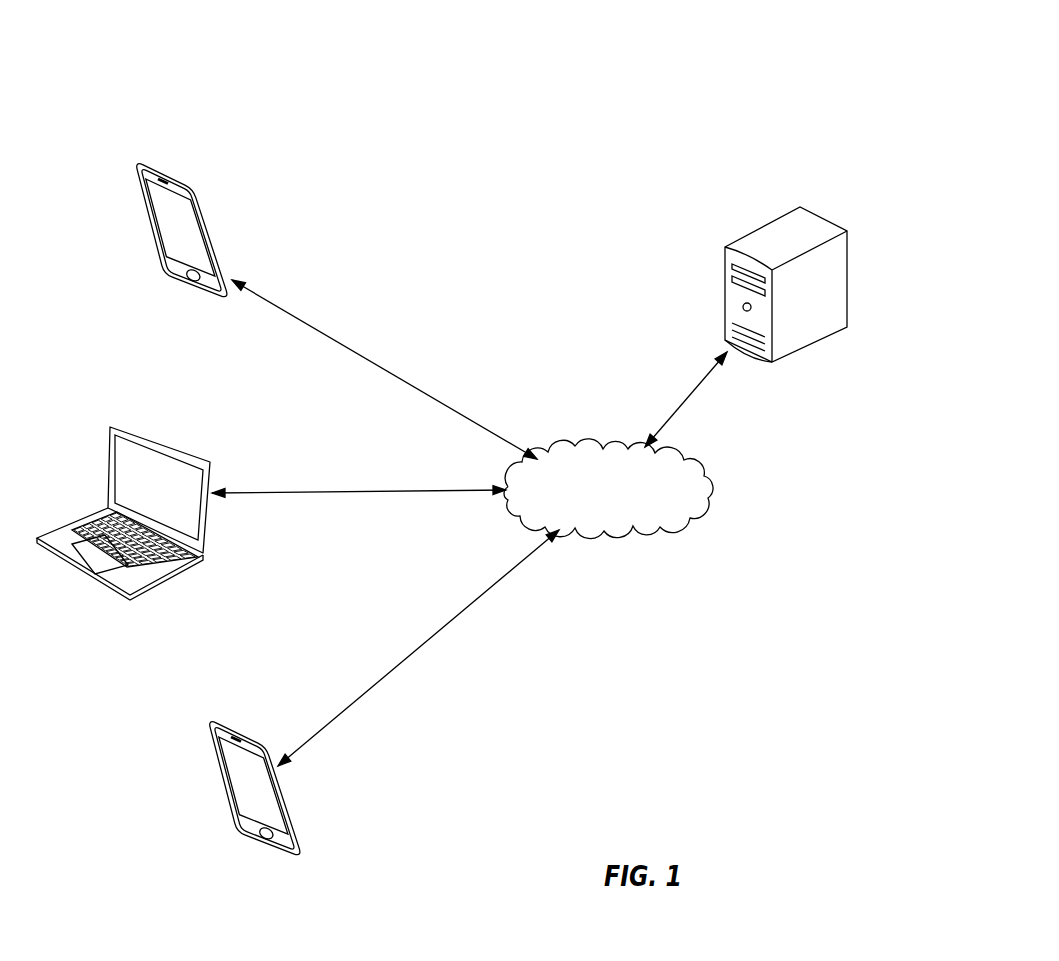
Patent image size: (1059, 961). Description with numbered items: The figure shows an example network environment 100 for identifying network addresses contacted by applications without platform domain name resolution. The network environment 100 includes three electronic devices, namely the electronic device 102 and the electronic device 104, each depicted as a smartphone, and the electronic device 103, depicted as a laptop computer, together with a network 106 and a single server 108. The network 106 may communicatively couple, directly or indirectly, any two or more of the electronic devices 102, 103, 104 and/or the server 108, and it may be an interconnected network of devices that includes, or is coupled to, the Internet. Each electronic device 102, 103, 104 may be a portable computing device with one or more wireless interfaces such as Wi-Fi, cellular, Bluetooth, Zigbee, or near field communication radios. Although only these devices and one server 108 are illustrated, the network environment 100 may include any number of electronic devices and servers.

The network environment 100 is at (198, 78).
The electronic device 102 is at (248, 850).
The electronic device 103 is at (123, 592).
The electronic device 104 is at (190, 293).
The network 106 is at (635, 528).
The server 108 is at (737, 237).